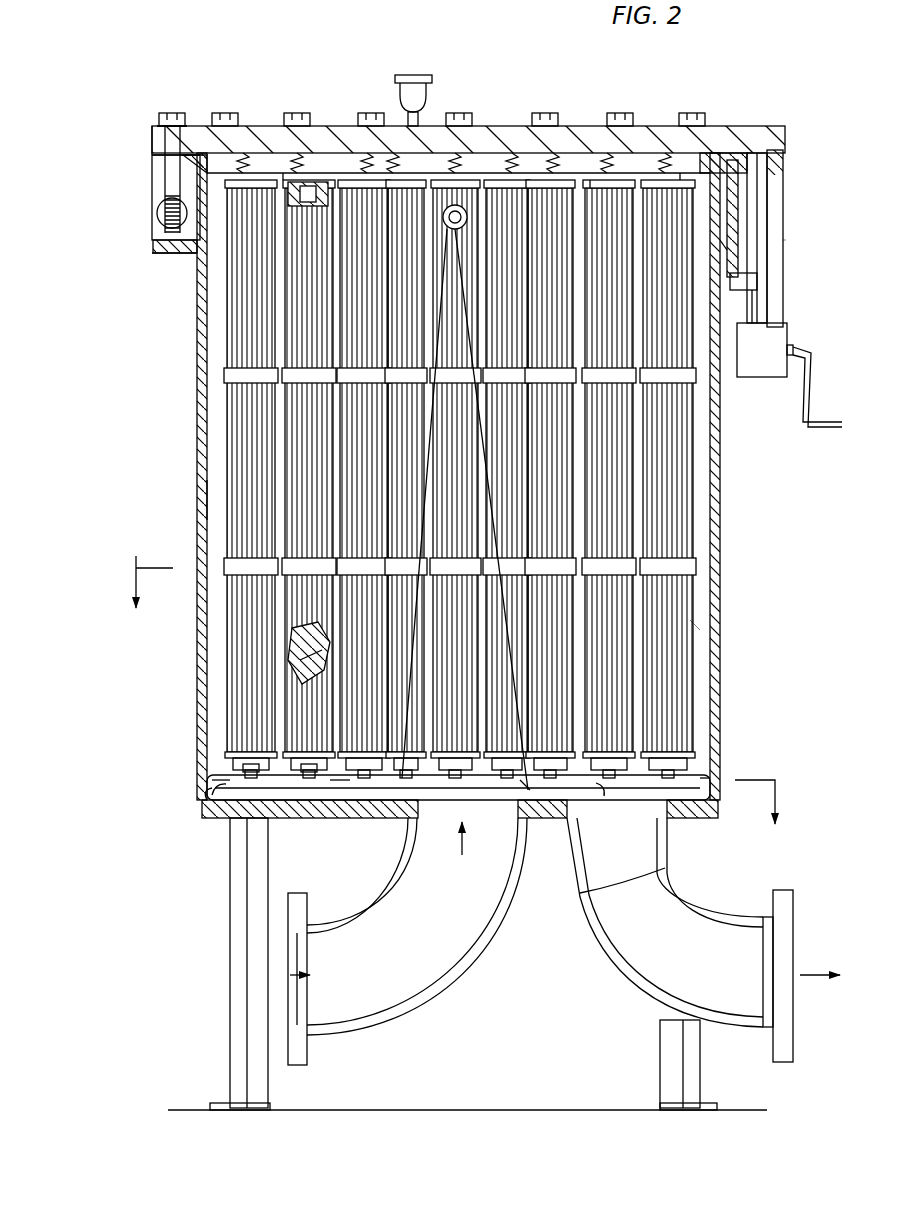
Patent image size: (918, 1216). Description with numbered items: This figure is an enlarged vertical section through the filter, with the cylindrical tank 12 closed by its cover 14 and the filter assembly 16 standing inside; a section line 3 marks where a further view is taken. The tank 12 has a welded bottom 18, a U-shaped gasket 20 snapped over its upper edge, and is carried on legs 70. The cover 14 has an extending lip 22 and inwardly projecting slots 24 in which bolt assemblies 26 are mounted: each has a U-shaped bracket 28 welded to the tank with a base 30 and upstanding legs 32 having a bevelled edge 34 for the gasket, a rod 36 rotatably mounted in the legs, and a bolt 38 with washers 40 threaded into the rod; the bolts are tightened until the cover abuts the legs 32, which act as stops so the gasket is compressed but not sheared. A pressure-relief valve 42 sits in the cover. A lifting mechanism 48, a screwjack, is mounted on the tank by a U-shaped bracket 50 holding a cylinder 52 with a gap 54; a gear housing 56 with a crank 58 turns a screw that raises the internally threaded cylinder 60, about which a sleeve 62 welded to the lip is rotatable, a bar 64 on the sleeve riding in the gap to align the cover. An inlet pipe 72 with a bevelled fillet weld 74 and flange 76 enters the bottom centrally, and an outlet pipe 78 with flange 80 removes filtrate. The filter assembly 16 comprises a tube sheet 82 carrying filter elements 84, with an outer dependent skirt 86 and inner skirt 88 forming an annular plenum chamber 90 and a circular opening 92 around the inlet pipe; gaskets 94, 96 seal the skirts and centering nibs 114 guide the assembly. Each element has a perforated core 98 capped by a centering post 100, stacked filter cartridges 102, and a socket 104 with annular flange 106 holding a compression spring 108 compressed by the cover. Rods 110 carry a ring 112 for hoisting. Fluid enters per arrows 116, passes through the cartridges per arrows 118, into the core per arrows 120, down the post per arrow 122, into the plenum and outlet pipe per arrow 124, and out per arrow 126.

The section line 3— 3 is at (453, 705).
The tank 12 is at (722, 555).
The cover 14 is at (500, 128).
The filter assembly 16 is at (685, 625).
The bottom 18 is at (346, 782).
The U-shaped gasket 20 is at (222, 168).
The lip 22 is at (780, 128).
The slots 24 is at (158, 142).
The bolt assembly 26 is at (152, 252).
The U-shaped bracket 28 is at (150, 232).
The base 30 is at (176, 254).
The legs 32 is at (155, 222).
The bevelled edge 34 is at (200, 152).
The rod 36 is at (163, 203).
The bolt 38 is at (172, 112).
The washers 40 is at (162, 118).
The pressure-relief valve 42 is at (420, 78).
The lifting mechanism 48 is at (781, 243).
The U-shaped bracket 50 is at (720, 247).
The cylinder 52 is at (760, 310).
The gap 54 is at (755, 285).
The gear housing 56 is at (757, 373).
The crank 58 is at (805, 432).
The internally threaded cylinder 60 is at (760, 198).
The sleeve 62 is at (785, 172).
The bar 64 is at (760, 150).
The legs 70 is at (230, 930).
The pipe 72 is at (455, 935).
The bevelled fillet weld 74 is at (437, 802).
The flange 76 is at (310, 926).
The pipe 78 is at (685, 940).
The flange 80 is at (786, 895).
The tube sheet 82 is at (300, 800).
The filter elements 84 is at (228, 500).
The outer peripheral dependent skirt 86 is at (705, 778).
The inner dependent skirt 88 is at (530, 785).
The annular plenum chamber 90 is at (232, 810).
The circular opening 92 is at (445, 765).
The U-shaped gasket 94 is at (208, 800).
The U-shaped gasket 96 is at (384, 826).
The perforated core 98 is at (330, 672).
The centering post 100 is at (243, 770).
The filter cartridges 102 is at (320, 300).
The socket 104 is at (307, 153).
The annular flange 106 is at (283, 170).
The compression spring 108 is at (312, 182).
The rods 110 is at (452, 322).
The ring 112 is at (466, 228).
The centering nibs 114 is at (224, 780).
The arrows 116 is at (285, 975).
The arrows 118 is at (600, 270).
The arrows 120 is at (296, 614).
The arrow 122 is at (362, 770).
The arrow 124 is at (621, 830).
The arrow 126 is at (802, 975).